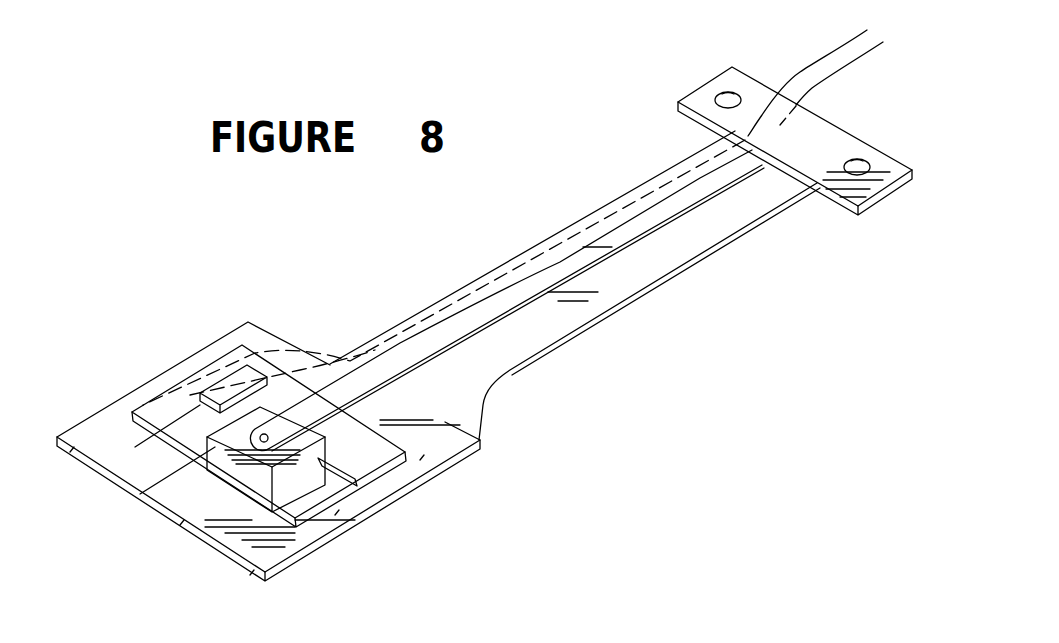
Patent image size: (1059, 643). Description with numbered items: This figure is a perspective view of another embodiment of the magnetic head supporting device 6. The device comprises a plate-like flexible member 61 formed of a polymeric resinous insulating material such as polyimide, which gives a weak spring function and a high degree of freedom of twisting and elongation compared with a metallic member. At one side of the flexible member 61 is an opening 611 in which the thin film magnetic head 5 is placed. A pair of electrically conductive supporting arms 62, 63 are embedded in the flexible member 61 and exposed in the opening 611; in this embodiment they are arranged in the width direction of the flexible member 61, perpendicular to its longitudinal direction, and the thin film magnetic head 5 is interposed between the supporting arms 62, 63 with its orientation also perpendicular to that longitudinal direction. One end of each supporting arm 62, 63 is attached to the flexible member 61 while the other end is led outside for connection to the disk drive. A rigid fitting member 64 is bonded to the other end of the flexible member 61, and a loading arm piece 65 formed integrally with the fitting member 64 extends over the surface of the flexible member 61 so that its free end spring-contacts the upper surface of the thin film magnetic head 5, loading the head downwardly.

The thin film magnetic head 5 is at (288, 512).
The magnetic head supporting device 6 is at (621, 314).
The flexible member 61 is at (400, 470).
The opening 611 is at (350, 459).
The supporting arm 62 is at (797, 80).
The supporting arm 63 is at (816, 82).
The fitting member 64 is at (730, 84).
The loading arm piece 65 is at (443, 333).